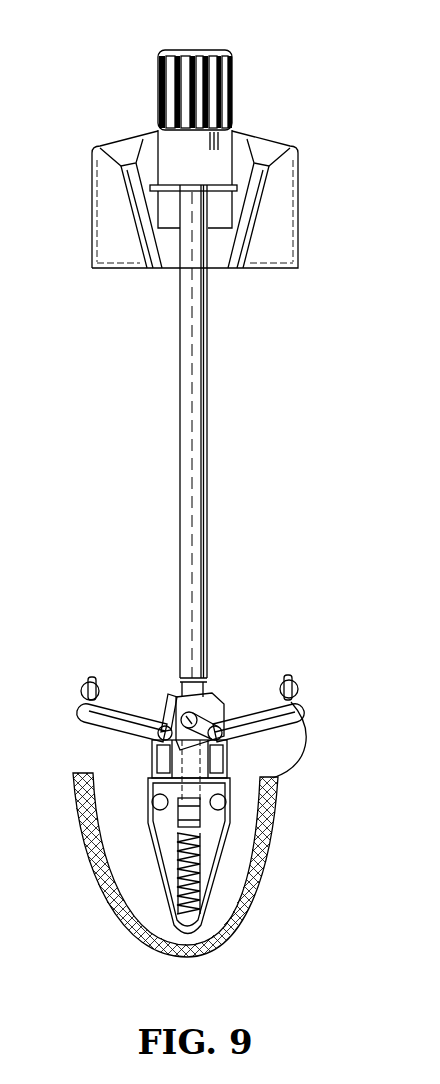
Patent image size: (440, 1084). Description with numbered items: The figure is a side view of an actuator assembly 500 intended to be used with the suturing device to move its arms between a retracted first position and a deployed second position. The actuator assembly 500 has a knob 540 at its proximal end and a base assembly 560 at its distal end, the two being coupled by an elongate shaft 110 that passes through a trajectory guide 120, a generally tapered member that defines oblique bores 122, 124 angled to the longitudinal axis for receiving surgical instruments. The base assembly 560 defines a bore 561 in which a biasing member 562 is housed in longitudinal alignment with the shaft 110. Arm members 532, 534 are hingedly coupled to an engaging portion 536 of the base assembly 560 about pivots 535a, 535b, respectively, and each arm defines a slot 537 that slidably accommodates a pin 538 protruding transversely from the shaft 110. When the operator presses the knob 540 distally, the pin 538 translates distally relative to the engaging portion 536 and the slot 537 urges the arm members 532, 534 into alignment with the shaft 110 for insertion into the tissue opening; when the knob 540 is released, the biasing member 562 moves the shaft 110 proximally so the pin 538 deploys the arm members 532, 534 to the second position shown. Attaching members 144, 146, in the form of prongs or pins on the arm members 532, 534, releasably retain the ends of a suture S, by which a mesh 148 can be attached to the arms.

The knob 540 is at (231, 73).
The trajectory guide 120 is at (148, 211).
The bore 122 is at (258, 211).
The bore 124 is at (140, 232).
The elongate shaft 110 is at (207, 403).
The attaching member 144 is at (92, 676).
The attaching member 146 is at (292, 677).
The pin 538 is at (172, 694).
The slot 537 is at (213, 697).
The pivot 535a is at (163, 724).
The pivot 535b is at (221, 718).
The arm member 532 is at (83, 708).
The arm member 534 is at (290, 712).
The actuator assembly 500 is at (190, 776).
The engaging portion 536 is at (217, 759).
The base assembly 560 is at (152, 853).
The bore 561 is at (202, 855).
The biasing member 562 is at (177, 908).
The mesh 148 is at (237, 939).
The suture S is at (298, 746).